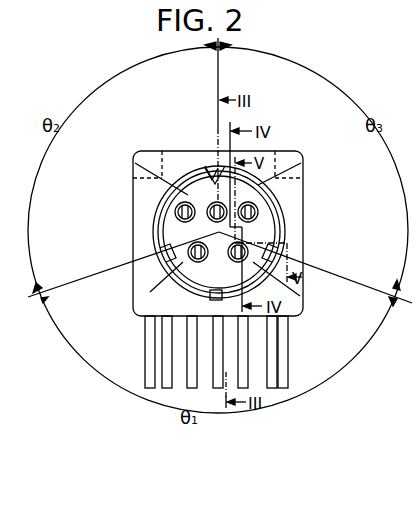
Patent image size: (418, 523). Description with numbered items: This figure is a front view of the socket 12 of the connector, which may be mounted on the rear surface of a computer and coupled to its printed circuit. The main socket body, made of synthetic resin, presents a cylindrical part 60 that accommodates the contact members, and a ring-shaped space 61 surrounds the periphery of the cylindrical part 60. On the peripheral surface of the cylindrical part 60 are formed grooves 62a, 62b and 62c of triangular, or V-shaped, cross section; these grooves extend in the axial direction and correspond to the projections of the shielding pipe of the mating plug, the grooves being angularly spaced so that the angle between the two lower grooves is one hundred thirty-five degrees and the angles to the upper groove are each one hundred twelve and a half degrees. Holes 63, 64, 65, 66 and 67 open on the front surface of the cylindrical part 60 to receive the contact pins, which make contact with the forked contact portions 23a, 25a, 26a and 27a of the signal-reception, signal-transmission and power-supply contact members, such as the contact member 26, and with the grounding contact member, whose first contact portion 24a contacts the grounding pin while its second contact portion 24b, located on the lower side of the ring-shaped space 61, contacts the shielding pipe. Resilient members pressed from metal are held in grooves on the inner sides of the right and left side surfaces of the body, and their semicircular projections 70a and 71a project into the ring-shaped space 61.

The socket 12 is at (305, 123).
The contact portion 23a is at (162, 180).
The first contact portion 24a is at (207, 202).
The second contact portion 24b is at (212, 295).
The contact portion 25a is at (280, 200).
The contact member 26 is at (152, 226).
The contact portion 26a is at (188, 262).
The contact portion 27a is at (246, 262).
The cylindrical part 60 is at (160, 173).
The ring-shaped space 61 is at (283, 172).
The groove 62a is at (215, 182).
The groove 62b is at (160, 246).
The groove 62c is at (278, 247).
The hole 63 is at (163, 196).
The hole 64 is at (197, 198).
The hole 65 is at (275, 200).
The hole 66 is at (138, 296).
The hole 67 is at (300, 308).
The semicircular projection 70a is at (303, 232).
The semicircular projection 71a is at (138, 233).